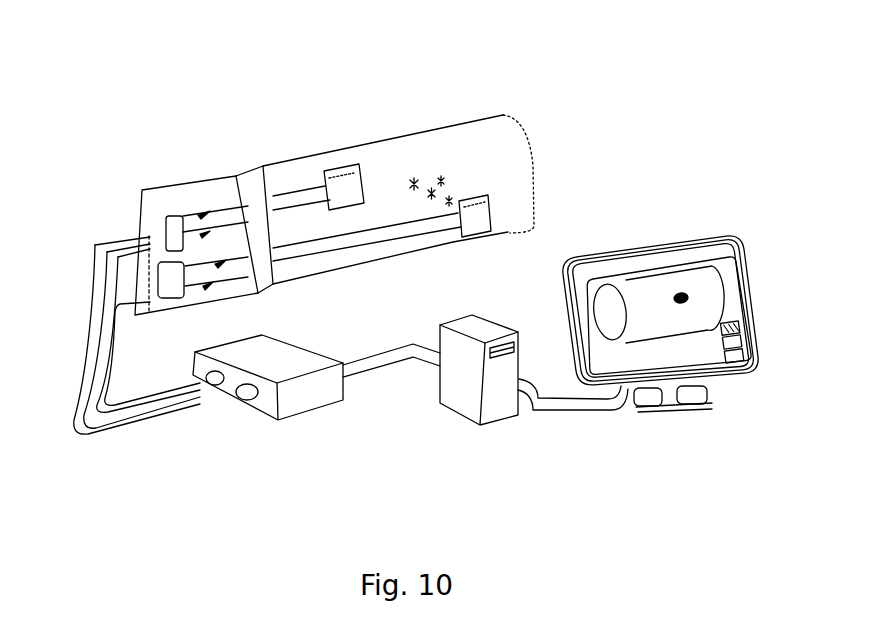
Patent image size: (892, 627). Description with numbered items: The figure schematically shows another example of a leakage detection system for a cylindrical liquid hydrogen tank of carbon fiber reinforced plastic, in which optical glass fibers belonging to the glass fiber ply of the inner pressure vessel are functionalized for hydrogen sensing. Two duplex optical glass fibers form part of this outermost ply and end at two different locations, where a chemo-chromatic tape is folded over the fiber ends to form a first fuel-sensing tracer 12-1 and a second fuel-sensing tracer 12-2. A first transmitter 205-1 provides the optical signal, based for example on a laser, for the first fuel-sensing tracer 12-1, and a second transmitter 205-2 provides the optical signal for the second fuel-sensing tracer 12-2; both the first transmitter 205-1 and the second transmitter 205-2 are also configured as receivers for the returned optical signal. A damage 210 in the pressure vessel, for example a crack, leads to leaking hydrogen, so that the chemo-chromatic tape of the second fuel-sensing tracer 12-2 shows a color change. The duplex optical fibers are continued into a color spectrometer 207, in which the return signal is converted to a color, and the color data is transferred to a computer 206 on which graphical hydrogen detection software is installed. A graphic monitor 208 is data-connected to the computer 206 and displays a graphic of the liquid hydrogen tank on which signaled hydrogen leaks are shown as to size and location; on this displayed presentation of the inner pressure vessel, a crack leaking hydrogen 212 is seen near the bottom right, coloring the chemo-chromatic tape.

The first transmitter 205-1 is at (172, 216).
The second transmitter 205-2 is at (160, 268).
The first fuel-sensing tracer 12-1 is at (342, 184).
The second fuel-sensing tracer 12-2 is at (473, 204).
The damage 210 is at (422, 192).
The computer 206 is at (462, 398).
The color spectrometer 207 is at (298, 398).
The graphic monitor 208 is at (632, 370).
The crack leaking hydrogen 212 is at (680, 303).